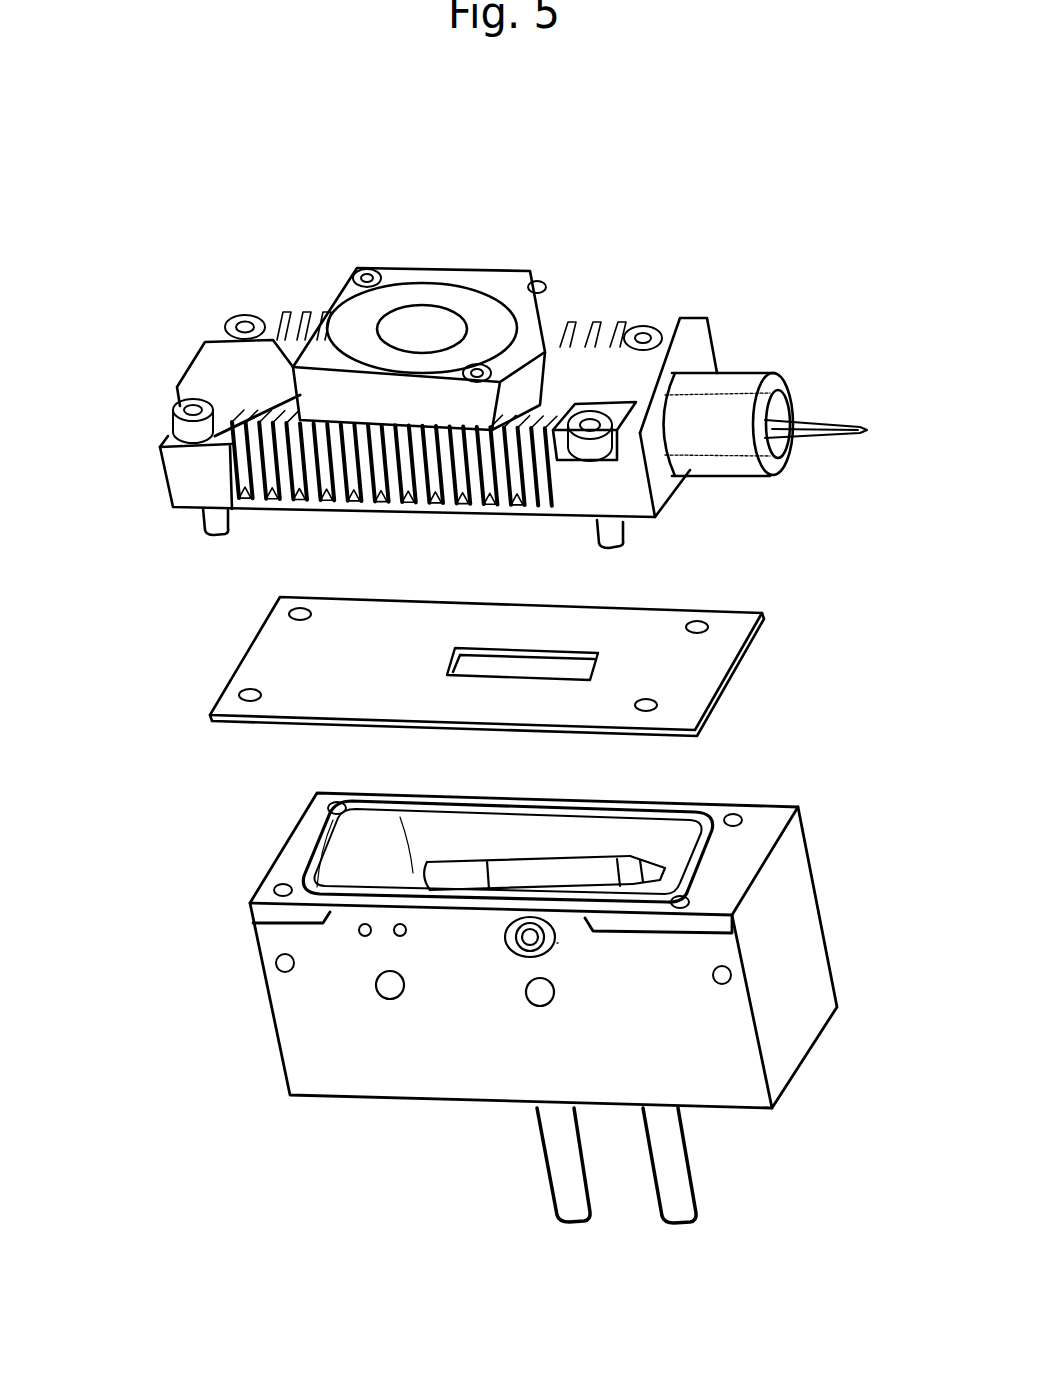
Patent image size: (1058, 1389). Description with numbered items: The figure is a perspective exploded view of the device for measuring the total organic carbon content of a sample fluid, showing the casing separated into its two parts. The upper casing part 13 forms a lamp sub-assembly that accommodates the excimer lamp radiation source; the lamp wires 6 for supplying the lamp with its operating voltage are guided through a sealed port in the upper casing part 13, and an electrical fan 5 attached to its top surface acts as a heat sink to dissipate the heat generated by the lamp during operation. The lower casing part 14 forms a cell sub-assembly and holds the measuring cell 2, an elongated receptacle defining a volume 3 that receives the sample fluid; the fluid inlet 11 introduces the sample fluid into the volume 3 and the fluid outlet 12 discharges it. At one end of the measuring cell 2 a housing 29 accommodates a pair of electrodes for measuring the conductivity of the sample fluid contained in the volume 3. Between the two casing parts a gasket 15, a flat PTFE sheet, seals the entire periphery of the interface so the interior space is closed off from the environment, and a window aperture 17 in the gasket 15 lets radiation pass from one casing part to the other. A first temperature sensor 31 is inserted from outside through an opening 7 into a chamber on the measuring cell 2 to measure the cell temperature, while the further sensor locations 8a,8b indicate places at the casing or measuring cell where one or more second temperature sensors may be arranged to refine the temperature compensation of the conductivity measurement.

The measuring cell 2 is at (665, 885).
The volume 3 is at (530, 880).
The electrical fan 5 is at (488, 330).
The lamp wires 6 is at (835, 437).
The opening 7 is at (557, 943).
The locations for second temperature sensors 8a,8b is at (525, 993).
The fluid inlet 11 is at (683, 1183).
The fluid outlet 12 is at (580, 1188).
The upper casing part 13 is at (617, 380).
The lower casing part 14 is at (300, 1017).
The gasket 15 is at (677, 680).
The window aperture 17 is at (527, 663).
The housing 29 is at (425, 873).
The first temperature sensor 31 is at (575, 930).